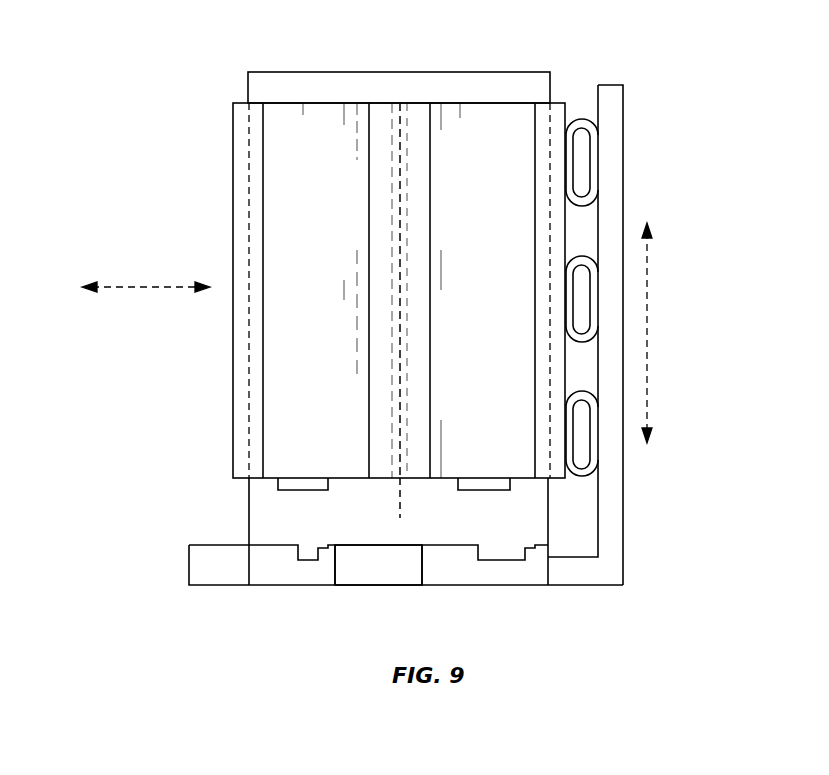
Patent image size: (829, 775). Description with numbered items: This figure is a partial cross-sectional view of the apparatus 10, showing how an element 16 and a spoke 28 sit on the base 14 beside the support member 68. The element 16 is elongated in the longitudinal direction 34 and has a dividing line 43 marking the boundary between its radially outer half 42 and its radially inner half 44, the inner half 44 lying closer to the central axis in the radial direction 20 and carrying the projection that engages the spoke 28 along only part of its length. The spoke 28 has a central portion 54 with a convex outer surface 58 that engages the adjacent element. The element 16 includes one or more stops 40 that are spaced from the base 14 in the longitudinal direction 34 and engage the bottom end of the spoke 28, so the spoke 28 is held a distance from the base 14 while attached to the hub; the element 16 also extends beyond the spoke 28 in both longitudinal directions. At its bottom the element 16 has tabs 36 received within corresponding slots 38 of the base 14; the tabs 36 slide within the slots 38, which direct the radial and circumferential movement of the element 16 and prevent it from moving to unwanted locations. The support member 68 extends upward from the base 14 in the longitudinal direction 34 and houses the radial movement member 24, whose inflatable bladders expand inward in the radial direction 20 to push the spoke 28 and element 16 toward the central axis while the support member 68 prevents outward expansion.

The apparatus 10 is at (138, 72).
The base 14 is at (372, 570).
The element 16 is at (302, 90).
The radial direction 20 is at (147, 287).
The radial movement member 24 is at (593, 166).
The spoke 28 is at (460, 130).
The longitudinal direction 34 is at (647, 330).
The tab 36 is at (308, 552).
The slot 38 is at (278, 572).
The stop 40 is at (298, 492).
The radially outer half 42 is at (505, 142).
The dividing line 43 is at (400, 483).
The radially inner half 44 is at (328, 142).
The central portion 54 is at (383, 385).
The convex outer surface 58 is at (410, 142).
The support member 68 is at (620, 496).